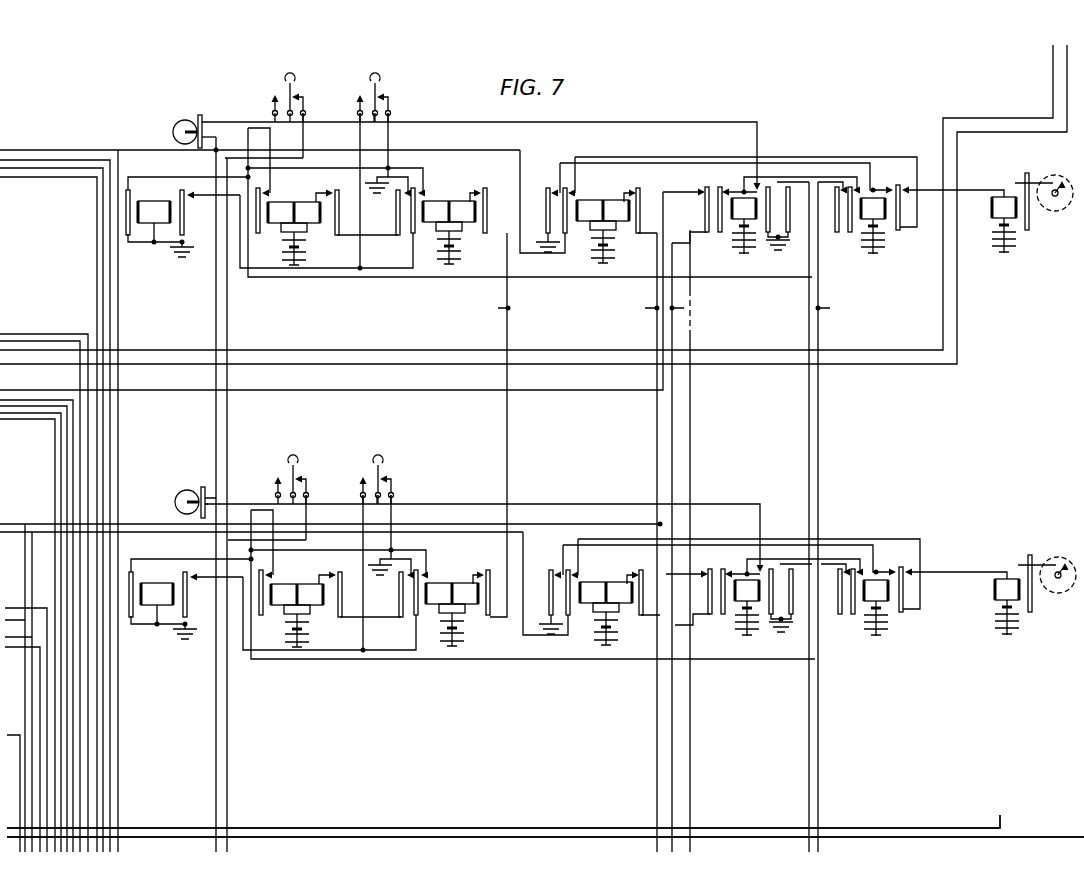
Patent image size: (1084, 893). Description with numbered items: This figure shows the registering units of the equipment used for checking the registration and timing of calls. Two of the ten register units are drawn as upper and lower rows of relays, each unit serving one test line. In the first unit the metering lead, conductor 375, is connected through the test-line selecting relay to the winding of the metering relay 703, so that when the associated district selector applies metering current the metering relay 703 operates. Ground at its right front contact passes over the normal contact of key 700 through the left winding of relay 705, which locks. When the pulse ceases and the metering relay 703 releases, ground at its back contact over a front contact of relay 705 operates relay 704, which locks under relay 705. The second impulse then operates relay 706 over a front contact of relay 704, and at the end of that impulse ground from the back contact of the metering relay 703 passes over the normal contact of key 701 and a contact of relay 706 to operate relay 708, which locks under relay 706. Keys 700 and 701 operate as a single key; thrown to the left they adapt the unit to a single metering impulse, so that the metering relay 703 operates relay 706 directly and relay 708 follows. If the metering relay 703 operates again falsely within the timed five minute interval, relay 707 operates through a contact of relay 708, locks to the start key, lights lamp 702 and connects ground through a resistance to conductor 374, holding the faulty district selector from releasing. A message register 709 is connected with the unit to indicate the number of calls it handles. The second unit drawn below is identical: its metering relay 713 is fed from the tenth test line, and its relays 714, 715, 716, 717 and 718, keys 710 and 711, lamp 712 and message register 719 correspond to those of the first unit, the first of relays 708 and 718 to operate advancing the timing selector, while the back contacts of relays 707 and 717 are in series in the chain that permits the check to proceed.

The key 700 is at (296, 80).
The key 701 is at (380, 80).
The lamp 702 is at (183, 120).
The metering relay 703 is at (156, 224).
The relay 704 is at (300, 208).
The relay 705 is at (455, 208).
The relay 706 is at (604, 206).
The relay 707 is at (740, 214).
The relay 708 is at (878, 214).
The message register 709 is at (1004, 198).
The key 710 is at (288, 443).
The key 711 is at (378, 443).
The lamp 712 is at (186, 494).
The metering relay 713 is at (161, 608).
The relay 714 is at (296, 590).
The relay 715 is at (452, 590).
The relay 716 is at (601, 588).
The relay 717 is at (750, 598).
The relay 718 is at (880, 585).
The message register 719 is at (1026, 562).
The conductor 374 is at (540, 828).
The conductor 375 is at (565, 837).